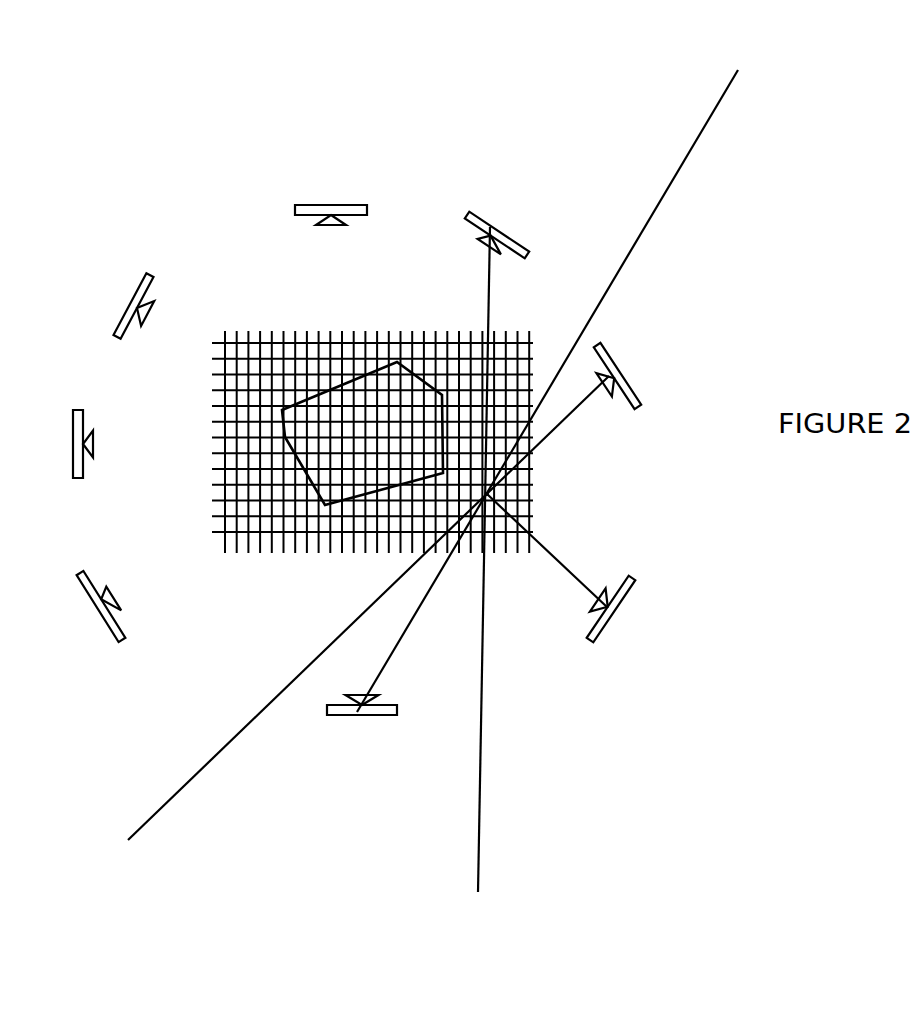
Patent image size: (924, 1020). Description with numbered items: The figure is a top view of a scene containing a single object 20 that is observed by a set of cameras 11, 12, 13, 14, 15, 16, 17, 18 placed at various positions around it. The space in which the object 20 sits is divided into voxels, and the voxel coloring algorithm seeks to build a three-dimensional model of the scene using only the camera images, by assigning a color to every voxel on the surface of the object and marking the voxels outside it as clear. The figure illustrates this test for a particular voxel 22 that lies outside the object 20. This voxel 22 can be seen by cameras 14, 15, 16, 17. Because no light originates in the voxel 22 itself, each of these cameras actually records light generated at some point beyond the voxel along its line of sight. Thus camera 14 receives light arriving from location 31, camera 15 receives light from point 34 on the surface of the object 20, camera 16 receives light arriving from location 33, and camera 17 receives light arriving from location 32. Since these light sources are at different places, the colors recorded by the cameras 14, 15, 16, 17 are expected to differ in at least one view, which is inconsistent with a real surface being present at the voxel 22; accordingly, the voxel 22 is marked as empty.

The camera 11 is at (137, 290).
The camera 12 is at (73, 411).
The camera 13 is at (83, 578).
The camera 14 is at (332, 710).
The camera 15 is at (626, 577).
The camera 16 is at (634, 382).
The camera 17 is at (470, 218).
The camera 18 is at (300, 210).
The object 20 is at (318, 398).
The voxel 22 is at (522, 545).
The location 31 is at (559, 371).
The location 32 is at (463, 570).
The location 33 is at (351, 626).
The point 34 is at (441, 452).